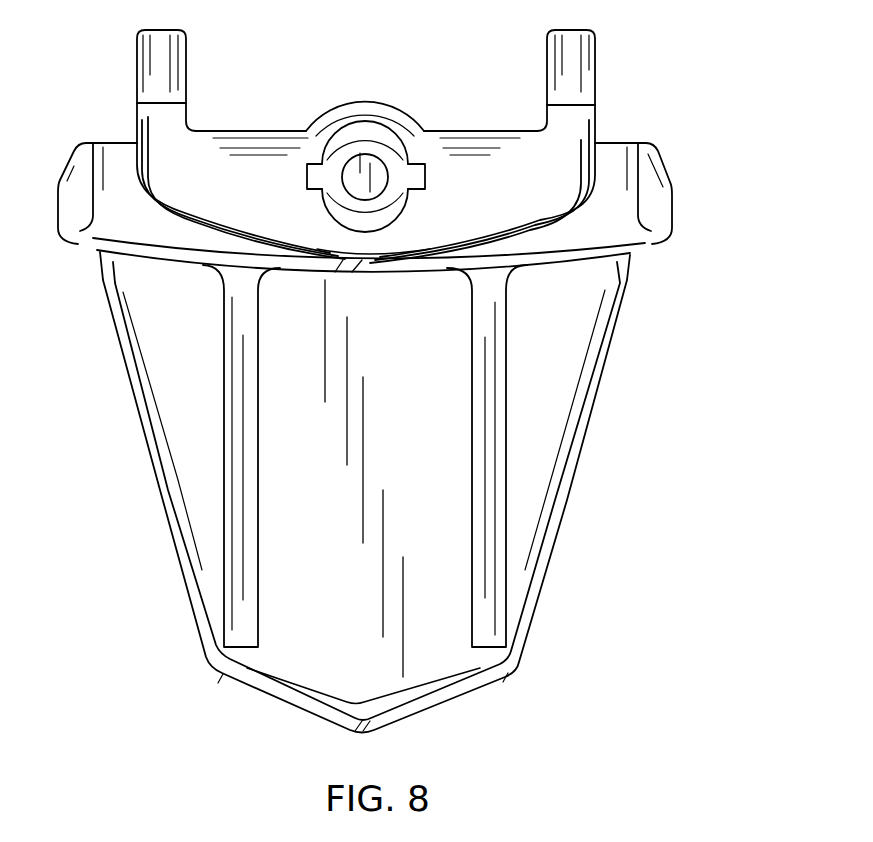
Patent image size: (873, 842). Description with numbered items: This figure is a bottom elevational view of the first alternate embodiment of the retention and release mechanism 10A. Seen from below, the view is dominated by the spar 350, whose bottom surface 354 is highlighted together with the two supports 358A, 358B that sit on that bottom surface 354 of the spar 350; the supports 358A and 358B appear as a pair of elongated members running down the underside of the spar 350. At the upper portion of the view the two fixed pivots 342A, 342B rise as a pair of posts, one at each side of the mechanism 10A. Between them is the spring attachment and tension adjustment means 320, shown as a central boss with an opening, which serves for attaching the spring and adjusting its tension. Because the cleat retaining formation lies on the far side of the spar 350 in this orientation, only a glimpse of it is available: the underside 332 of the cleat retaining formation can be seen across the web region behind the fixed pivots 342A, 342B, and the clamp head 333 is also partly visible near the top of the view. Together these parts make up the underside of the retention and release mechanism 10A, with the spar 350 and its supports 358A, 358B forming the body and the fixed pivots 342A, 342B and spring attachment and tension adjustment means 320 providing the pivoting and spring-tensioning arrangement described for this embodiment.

The retention and release mechanism 10A is at (703, 108).
The fixed pivot 342A is at (158, 58).
The fixed pivot 342B is at (574, 60).
The clamp head 333 is at (213, 127).
The bottom surface 332 is at (268, 137).
The spring attachment and tension adjustment means 320 is at (367, 145).
The spar 350 is at (142, 436).
The bottom surface 354 is at (552, 440).
The support 358A is at (495, 603).
The support 358B is at (230, 592).